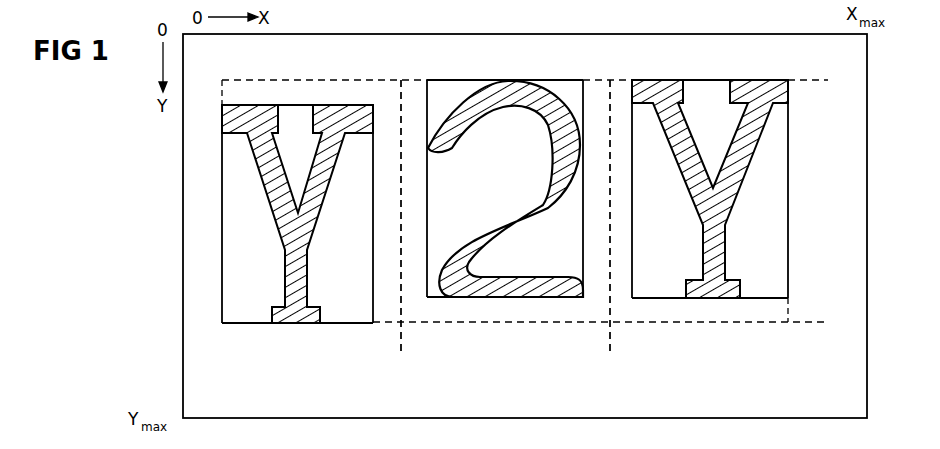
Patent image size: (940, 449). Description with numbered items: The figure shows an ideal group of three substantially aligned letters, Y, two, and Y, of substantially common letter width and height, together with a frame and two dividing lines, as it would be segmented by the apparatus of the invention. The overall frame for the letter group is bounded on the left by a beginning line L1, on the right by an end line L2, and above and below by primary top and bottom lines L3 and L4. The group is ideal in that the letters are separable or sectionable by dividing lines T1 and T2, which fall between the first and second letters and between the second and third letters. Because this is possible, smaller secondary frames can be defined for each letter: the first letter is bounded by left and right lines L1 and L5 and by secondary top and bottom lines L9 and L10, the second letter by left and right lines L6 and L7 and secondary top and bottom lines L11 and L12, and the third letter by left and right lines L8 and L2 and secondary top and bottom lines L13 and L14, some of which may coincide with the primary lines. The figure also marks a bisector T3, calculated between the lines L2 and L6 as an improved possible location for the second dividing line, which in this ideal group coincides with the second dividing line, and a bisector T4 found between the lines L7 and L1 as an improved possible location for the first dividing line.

The beginning line L1 is at (206, 214).
The end line L2 is at (800, 189).
The primary top line L3 is at (535, 81).
The primary bottom line L4 is at (611, 323).
The right line of first letter frame L5 is at (384, 214).
The left line of second letter frame L6 is at (415, 188).
The right line of second letter frame L7 is at (594, 188).
The left line of third letter frame L8 is at (622, 189).
The secondary top line of first letter frame L9 is at (297, 96).
The secondary bottom line of first letter frame L10 is at (297, 335).
The secondary top line of second letter frame L11 is at (505, 71).
The secondary bottom line of second letter frame L12 is at (505, 310).
The secondary top line of third letter frame L13 is at (710, 71).
The secondary bottom line of third letter frame L14 is at (710, 310).
The dividing line T1 is at (403, 229).
The dividing line T2 is at (612, 229).
The bisector T3 is at (612, 239).
The bisector T4 is at (402, 239).